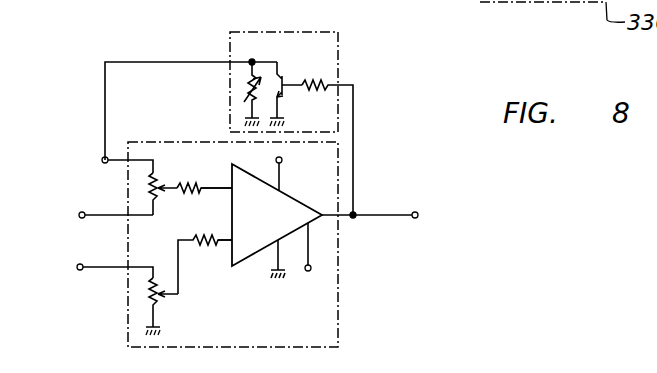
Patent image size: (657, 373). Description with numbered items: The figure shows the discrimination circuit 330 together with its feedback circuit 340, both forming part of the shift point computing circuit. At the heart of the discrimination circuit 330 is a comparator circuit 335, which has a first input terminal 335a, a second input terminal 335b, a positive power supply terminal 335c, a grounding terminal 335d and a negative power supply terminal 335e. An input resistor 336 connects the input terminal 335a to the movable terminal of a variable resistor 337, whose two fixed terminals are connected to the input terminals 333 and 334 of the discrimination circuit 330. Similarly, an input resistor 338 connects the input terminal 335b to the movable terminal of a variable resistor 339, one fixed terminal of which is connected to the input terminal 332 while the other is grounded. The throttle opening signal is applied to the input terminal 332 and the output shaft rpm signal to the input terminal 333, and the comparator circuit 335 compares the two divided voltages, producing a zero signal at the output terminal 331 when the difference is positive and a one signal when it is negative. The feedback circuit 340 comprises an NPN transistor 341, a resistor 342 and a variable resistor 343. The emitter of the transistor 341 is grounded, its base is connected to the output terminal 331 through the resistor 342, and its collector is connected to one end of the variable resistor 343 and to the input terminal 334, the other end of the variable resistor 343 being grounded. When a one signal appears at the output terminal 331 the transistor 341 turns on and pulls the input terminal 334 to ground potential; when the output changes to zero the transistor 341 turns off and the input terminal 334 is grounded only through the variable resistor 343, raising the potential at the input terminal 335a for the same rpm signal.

The discrimination circuit 330 is at (339, 320).
The output terminal 331 is at (412, 222).
The input terminal 332 is at (78, 270).
The input terminal 333 is at (80, 218).
The input terminal 334 is at (102, 158).
The comparator circuit 335 is at (305, 204).
The input terminal 335a is at (216, 187).
The input terminal 335b is at (229, 238).
The positive power supply terminal 335c is at (281, 176).
The grounding terminal 335d is at (271, 262).
The negative power supply terminal 335e is at (312, 250).
The input resistor 336 is at (189, 185).
The variable resistor 337 is at (150, 190).
The input resistor 338 is at (208, 246).
The variable resistor 339 is at (147, 292).
The feedback circuit 340 is at (280, 32).
The NPN transistor 341 is at (279, 76).
The resistor 342 is at (330, 84).
The variable resistor 343 is at (250, 80).